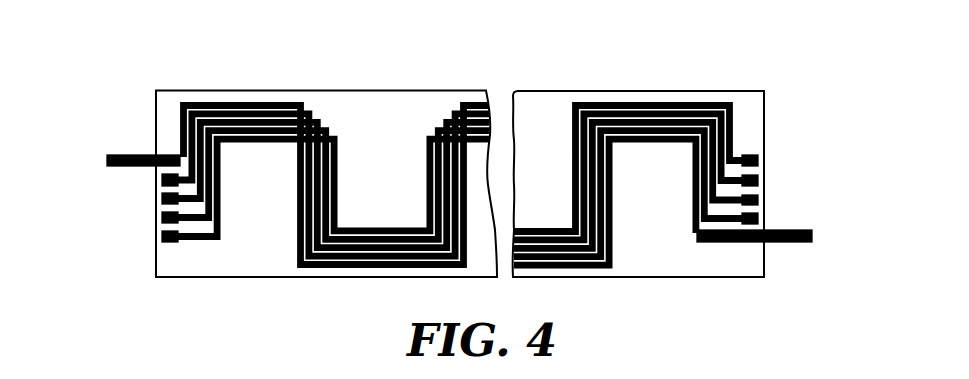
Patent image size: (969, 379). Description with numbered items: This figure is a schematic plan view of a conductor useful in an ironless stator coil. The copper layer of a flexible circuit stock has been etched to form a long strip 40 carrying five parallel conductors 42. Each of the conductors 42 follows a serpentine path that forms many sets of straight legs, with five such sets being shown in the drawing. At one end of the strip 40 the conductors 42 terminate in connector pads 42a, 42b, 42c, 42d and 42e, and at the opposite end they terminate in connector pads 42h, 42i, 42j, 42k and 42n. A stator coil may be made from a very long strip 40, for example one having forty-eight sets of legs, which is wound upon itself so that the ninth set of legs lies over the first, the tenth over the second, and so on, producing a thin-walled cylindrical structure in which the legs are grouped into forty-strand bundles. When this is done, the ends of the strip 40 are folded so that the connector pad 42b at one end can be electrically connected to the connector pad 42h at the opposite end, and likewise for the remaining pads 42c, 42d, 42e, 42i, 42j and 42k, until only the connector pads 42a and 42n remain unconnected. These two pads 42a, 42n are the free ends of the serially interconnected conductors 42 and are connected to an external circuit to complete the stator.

The strip 40 is at (407, 90).
The conductors 42 is at (340, 127).
The connector pad 42a is at (114, 154).
The connector pad 42b is at (160, 181).
The connector pad 42c is at (160, 198).
The connector pad 42d is at (160, 218).
The connector pad 42e is at (160, 238).
The connector pad 42h is at (758, 160).
The connector pad 42i is at (758, 180).
The connector pad 42j is at (758, 199).
The connector pad 42k is at (752, 226).
The connector pad 42n is at (800, 243).